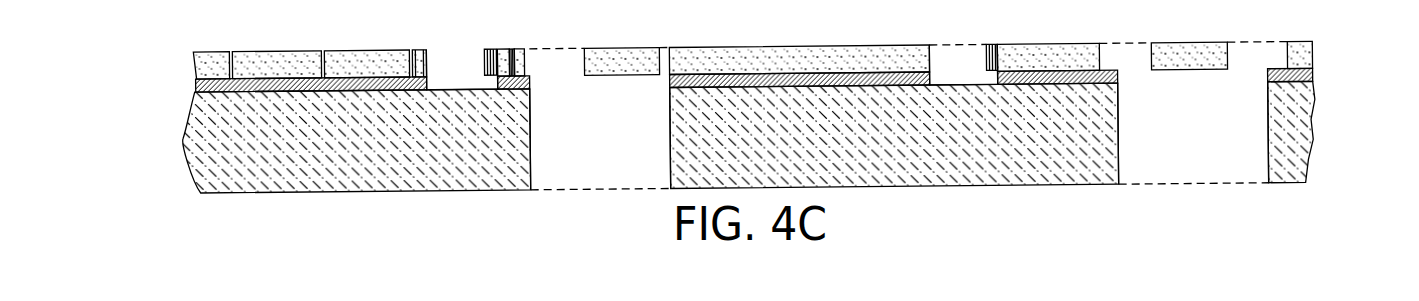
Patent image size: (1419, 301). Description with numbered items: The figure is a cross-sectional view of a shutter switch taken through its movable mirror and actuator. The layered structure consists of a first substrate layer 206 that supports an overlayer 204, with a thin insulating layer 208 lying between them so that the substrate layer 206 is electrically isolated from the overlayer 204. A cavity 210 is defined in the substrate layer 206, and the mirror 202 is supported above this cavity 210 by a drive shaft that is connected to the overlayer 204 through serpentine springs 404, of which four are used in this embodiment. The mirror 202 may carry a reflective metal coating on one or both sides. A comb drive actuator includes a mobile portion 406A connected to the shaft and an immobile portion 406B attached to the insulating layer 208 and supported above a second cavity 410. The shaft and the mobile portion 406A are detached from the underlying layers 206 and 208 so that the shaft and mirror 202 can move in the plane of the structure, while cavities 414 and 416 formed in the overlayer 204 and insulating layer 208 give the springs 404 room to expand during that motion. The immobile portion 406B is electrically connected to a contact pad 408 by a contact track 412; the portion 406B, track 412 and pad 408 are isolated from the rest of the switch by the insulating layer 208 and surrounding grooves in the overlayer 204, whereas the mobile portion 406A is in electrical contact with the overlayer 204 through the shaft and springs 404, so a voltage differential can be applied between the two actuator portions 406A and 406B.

The mirror 202 is at (1190, 43).
The overlayer 204 is at (1313, 53).
The first substrate layer 206 is at (1308, 128).
The insulating layer 208 is at (1313, 73).
The cavity 210 is at (1182, 157).
The serpentine springs 404 is at (480, 63).
The mobile portion of comb drive actuator 406A is at (648, 55).
The immobile portion of comb drive actuator 406B is at (518, 50).
The contact pad 408 is at (275, 63).
The cavity 410 is at (608, 150).
The contact track 412 is at (418, 50).
The cavity 414 is at (957, 62).
The cavity 416 is at (470, 73).